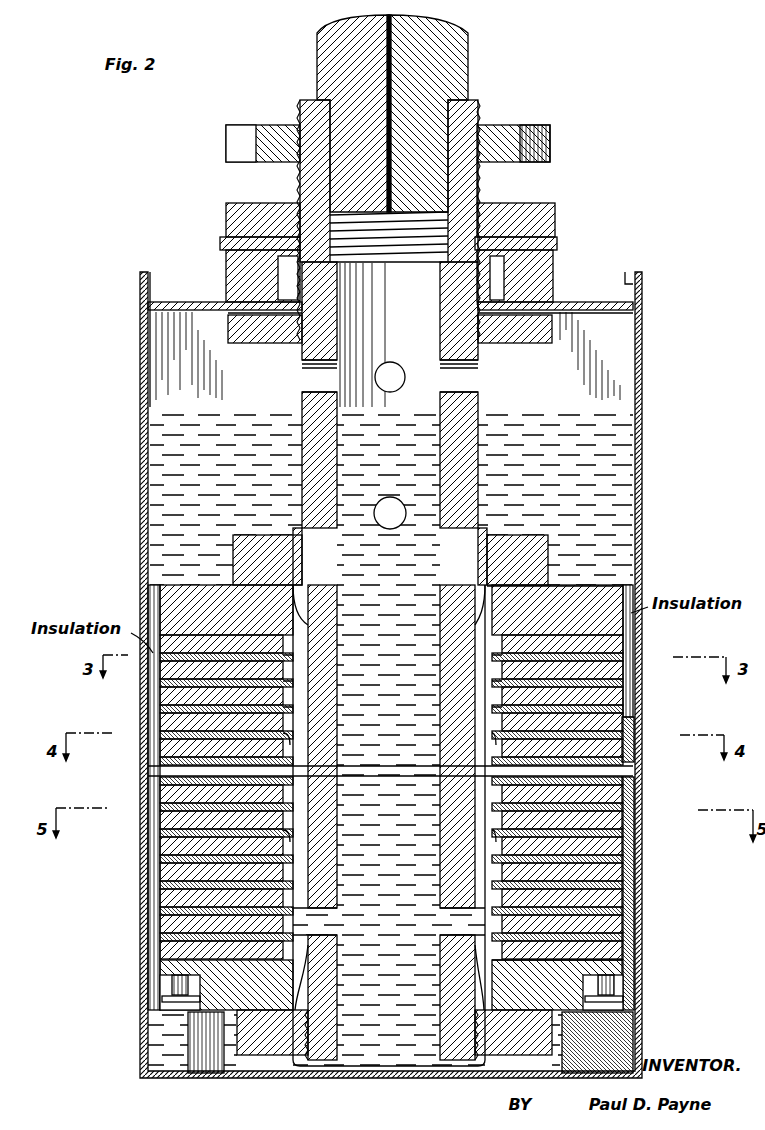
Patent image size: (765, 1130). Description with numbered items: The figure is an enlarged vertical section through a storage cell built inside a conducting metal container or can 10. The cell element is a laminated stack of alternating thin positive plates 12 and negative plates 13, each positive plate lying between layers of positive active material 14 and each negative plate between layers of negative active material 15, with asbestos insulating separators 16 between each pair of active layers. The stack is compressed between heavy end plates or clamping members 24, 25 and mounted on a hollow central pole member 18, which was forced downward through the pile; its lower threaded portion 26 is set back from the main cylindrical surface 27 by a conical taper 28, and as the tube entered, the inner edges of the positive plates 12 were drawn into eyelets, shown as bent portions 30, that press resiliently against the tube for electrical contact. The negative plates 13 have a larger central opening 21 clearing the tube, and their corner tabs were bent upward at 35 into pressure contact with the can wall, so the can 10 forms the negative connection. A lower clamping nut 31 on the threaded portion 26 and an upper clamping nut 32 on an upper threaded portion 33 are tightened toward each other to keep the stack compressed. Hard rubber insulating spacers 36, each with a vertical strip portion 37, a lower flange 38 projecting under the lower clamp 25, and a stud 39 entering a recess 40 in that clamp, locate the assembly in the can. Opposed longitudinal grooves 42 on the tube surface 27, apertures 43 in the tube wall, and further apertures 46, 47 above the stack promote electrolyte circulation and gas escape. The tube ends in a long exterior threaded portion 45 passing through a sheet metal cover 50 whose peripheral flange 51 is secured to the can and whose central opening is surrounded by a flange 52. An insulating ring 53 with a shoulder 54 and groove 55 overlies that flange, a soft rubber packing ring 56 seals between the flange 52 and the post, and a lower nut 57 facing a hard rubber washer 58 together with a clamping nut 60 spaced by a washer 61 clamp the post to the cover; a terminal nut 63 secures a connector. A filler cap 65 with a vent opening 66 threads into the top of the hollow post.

The container or can 10 is at (642, 367).
The positive plates 12 is at (160, 733).
The negative plates 13 is at (165, 824).
The positive active material layers 14 is at (612, 681).
The negative active material layers 15 is at (633, 736).
The insulating separators 16 is at (600, 661).
The central pole member 18 is at (548, 571).
The central opening 21 is at (165, 846).
The upper end plate or clamping member 24 is at (575, 587).
The lower end plate or clamping member 25 is at (625, 966).
The lower threaded portion 26 is at (323, 1052).
The main cylindrical surface 27 is at (293, 953).
The conical taper 28 is at (308, 1006).
The bent portions 30 is at (165, 950).
The lower clamping nut 31 is at (497, 1045).
The upper clamping nut 32 is at (548, 546).
The upper threaded portion 33 is at (487, 536).
The bent tabs 35 is at (142, 692).
The insulating spacers 36 is at (148, 771).
The strip portion 37 is at (165, 876).
The flange 38 is at (175, 1060).
The stud 39 is at (160, 998).
The hole or recess 40 is at (185, 1001).
The longitudinal grooves 42 is at (158, 609).
The apertures 43 is at (447, 629).
The exterior threaded portion 45 is at (476, 110).
The aperture 46 is at (313, 381).
The aperture 47 is at (302, 506).
The sheet metal cover 50 is at (579, 302).
The peripheral flange 51 is at (630, 272).
The flange 52 is at (553, 266).
The insulating ring 53 is at (226, 262).
The shoulder 54 is at (553, 208).
The groove 55 is at (226, 210).
The soft rubber packing ring 56 is at (300, 218).
The lower nut 57 is at (553, 347).
The hard rubber washer 58 is at (636, 313).
The clamping nut 60 is at (545, 198).
The washer 61 is at (557, 250).
The terminal nut 63 is at (515, 128).
The filler cap 65 is at (440, 55).
The vent opening 66 is at (391, 33).